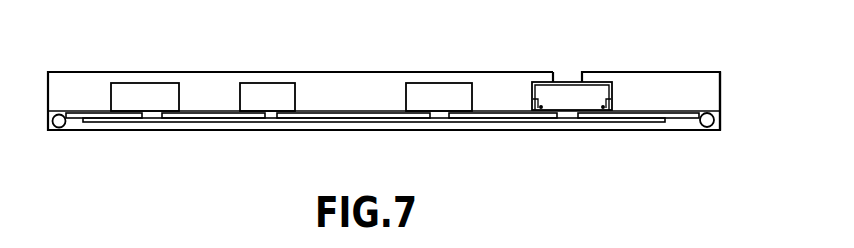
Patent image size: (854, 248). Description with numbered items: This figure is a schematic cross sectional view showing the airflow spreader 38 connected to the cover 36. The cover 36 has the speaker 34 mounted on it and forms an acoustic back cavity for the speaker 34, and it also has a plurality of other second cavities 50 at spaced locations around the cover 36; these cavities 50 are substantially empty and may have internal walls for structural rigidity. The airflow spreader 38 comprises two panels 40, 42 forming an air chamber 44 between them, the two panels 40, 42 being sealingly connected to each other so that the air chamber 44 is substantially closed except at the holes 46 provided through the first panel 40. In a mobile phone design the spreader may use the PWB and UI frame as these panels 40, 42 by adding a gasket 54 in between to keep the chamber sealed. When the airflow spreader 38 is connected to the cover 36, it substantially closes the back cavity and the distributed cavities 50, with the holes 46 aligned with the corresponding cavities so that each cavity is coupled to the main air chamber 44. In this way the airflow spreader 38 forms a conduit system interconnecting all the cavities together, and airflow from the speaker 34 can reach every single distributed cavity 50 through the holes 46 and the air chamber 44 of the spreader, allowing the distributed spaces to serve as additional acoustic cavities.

The speaker 34 is at (538, 87).
The cover 36 is at (119, 72).
The airflow spreader 38 is at (102, 127).
The first panel 40 is at (694, 118).
The second panel 42 is at (492, 128).
The air chamber 44 is at (352, 117).
The holes 46 is at (148, 118).
The second cavities 50 is at (170, 88).
The gasket 54 is at (720, 120).